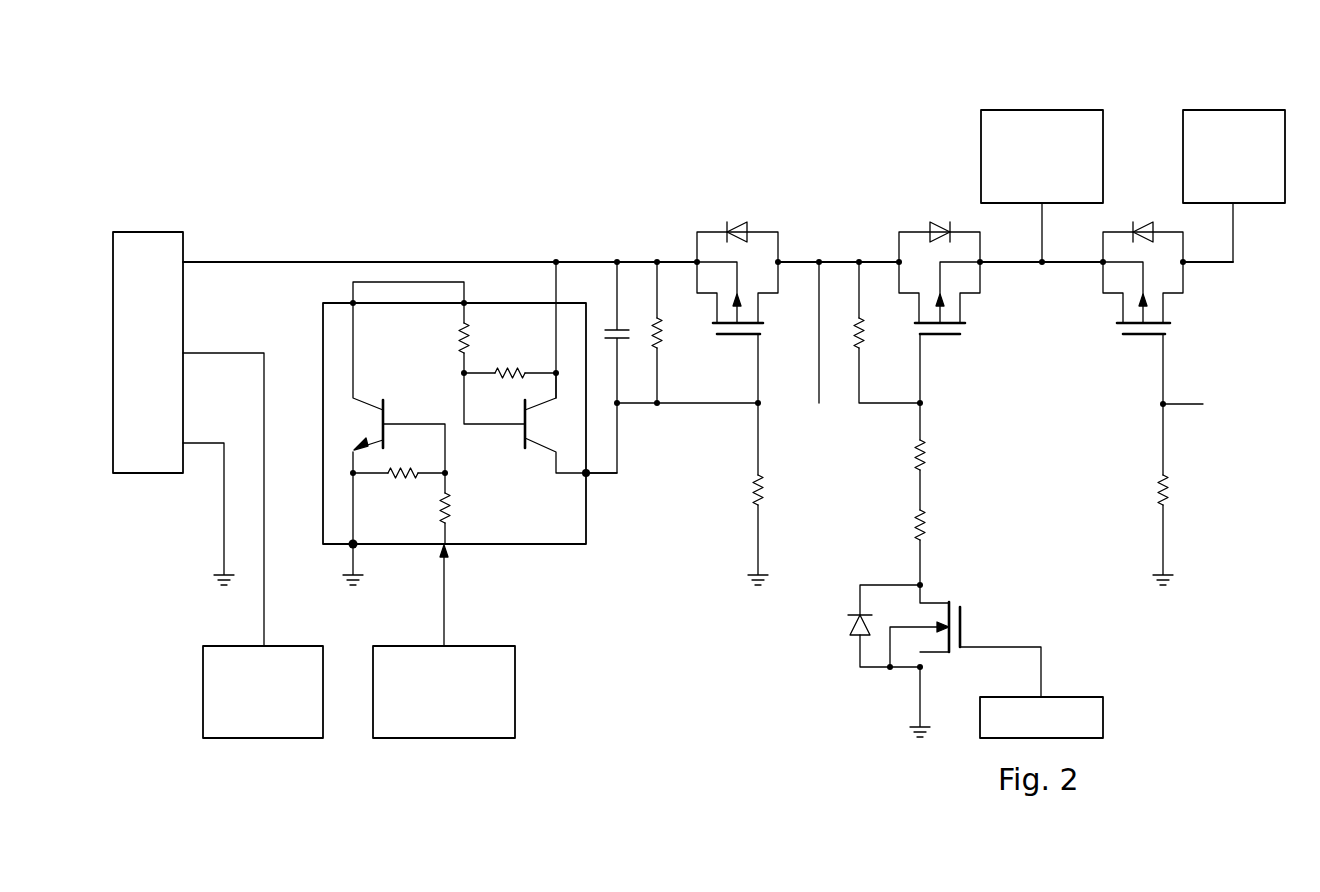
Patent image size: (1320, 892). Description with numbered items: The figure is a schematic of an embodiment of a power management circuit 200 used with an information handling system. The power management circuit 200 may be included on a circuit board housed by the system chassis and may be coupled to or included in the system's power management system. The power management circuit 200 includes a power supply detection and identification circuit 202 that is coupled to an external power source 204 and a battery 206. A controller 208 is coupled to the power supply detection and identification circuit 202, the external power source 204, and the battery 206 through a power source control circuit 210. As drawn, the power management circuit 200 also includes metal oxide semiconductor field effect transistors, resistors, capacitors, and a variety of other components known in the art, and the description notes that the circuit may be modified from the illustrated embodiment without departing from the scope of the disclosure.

The power management circuit 200 is at (338, 127).
The power supply detection and identification circuit 202 is at (255, 740).
The external power source 204 is at (1053, 108).
The battery 206 is at (1243, 108).
The controller 208 is at (435, 740).
The power source control circuit 210 is at (412, 552).